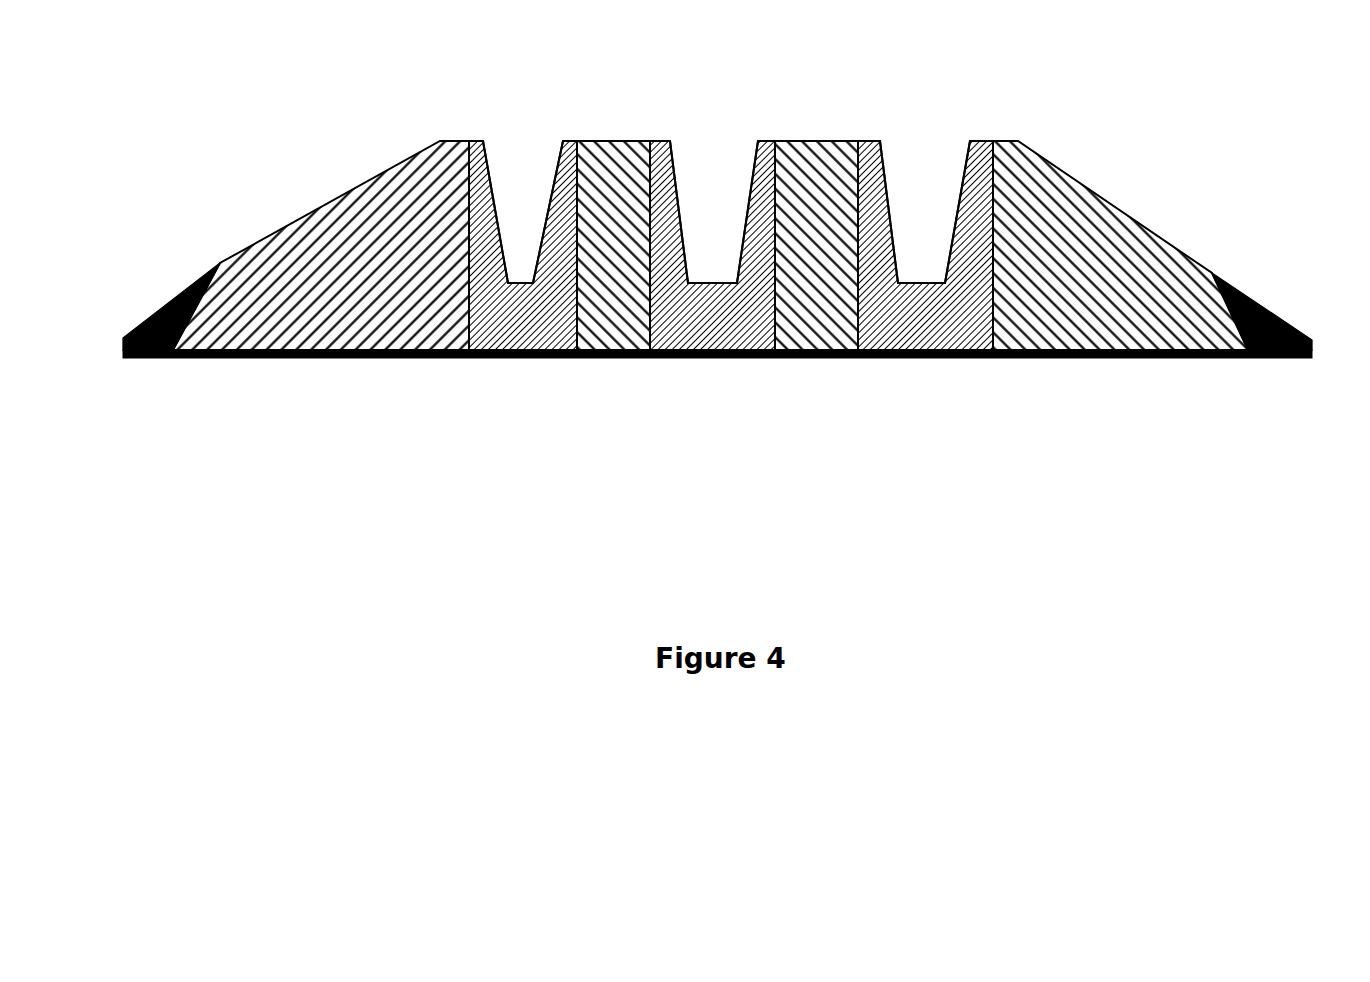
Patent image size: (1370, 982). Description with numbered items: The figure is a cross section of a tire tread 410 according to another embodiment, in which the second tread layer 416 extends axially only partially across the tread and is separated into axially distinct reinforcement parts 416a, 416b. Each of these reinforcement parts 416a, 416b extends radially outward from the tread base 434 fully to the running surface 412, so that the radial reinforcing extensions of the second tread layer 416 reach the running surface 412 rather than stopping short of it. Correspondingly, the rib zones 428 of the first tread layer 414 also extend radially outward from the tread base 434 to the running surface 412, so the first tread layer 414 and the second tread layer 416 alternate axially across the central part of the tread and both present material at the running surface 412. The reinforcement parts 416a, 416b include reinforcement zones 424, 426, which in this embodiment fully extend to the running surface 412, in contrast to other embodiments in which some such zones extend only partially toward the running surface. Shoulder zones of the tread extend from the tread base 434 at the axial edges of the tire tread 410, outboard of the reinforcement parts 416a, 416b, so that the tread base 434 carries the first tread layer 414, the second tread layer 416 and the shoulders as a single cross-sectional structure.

The tire tread 410 is at (717, 233).
The running surface 412 is at (643, 141).
The first tread layer 414 is at (699, 194).
The second tread layer 416 is at (761, 279).
The reinforcement part 416a is at (493, 318).
The reinforcement part 416b is at (693, 320).
The reinforcement zone 424 is at (476, 150).
The reinforcement zone 426 is at (560, 177).
The rib zone 428 is at (617, 172).
The tread base 434 is at (398, 353).